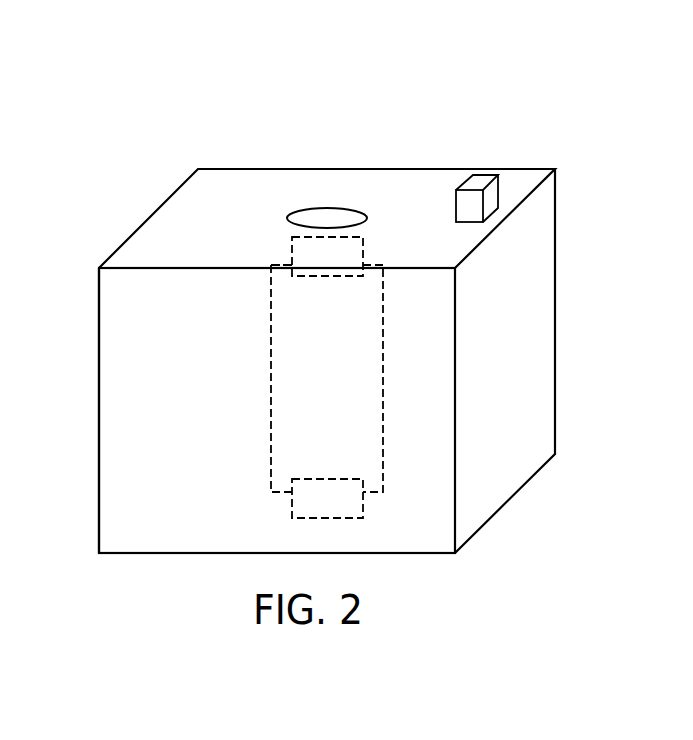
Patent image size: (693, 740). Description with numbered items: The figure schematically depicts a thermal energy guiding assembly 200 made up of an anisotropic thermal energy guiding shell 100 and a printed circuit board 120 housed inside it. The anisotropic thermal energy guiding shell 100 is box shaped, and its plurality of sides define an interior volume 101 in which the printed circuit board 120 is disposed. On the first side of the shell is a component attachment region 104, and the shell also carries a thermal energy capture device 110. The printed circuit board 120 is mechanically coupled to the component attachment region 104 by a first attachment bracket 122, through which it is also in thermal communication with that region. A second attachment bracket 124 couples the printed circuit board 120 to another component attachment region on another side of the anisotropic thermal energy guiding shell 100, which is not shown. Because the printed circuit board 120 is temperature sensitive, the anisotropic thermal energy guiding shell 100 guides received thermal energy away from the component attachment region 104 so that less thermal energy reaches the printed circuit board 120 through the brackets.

The thermal energy guiding assembly 200 is at (560, 125).
The anisotropic thermal energy guiding shell 100 is at (558, 238).
The interior volume 101 is at (138, 424).
The component attachment region 104 is at (328, 218).
The thermal energy capture device 110 is at (478, 182).
The printed circuit board 120 is at (271, 372).
The first attachment bracket 122 is at (292, 241).
The second attachment bracket 124 is at (292, 510).